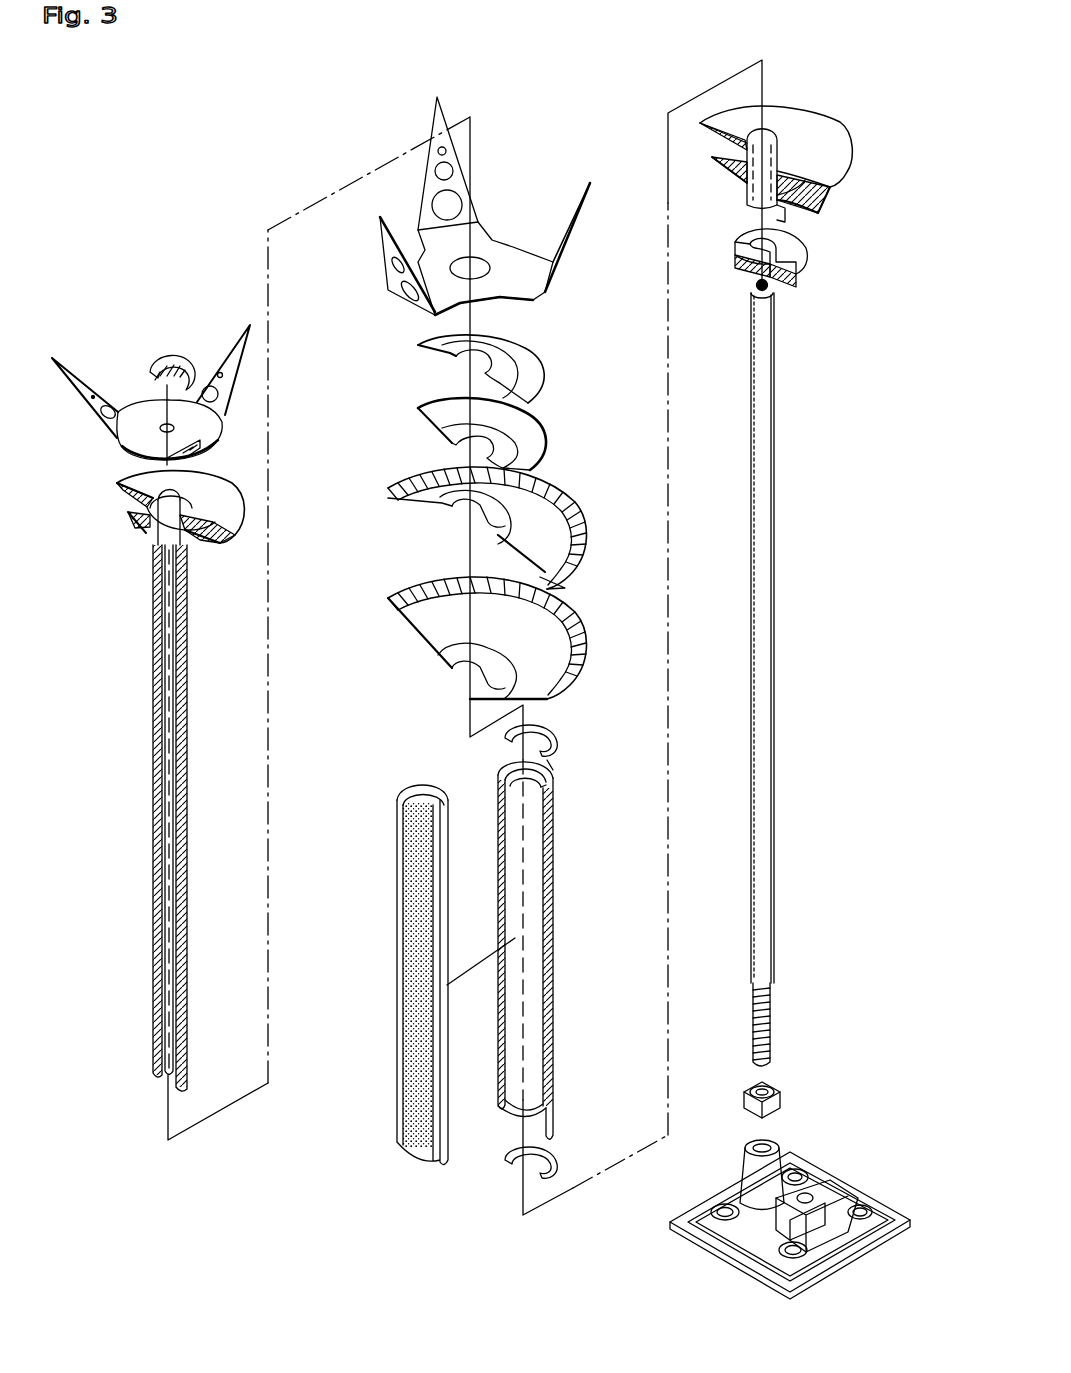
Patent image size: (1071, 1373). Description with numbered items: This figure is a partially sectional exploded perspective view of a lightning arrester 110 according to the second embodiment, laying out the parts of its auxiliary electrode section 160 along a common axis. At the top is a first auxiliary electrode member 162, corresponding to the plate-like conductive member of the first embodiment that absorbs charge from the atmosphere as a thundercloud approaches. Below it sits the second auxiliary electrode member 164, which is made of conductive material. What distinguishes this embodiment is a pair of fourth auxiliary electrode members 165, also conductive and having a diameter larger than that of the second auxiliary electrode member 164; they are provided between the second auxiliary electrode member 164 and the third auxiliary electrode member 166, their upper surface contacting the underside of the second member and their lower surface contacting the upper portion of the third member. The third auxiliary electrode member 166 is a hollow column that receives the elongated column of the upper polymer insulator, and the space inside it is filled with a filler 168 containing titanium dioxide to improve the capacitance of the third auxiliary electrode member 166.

The rotor assembly 110 is at (188, 166).
The hub assembly 160 is at (368, 364).
The blade plate 162 is at (503, 256).
The second auxiliary electrode member 164 is at (555, 376).
The fourth auxiliary electrode members 165 is at (592, 560).
The third auxiliary electrode member 166 is at (556, 898).
The filler 168 is at (400, 1100).